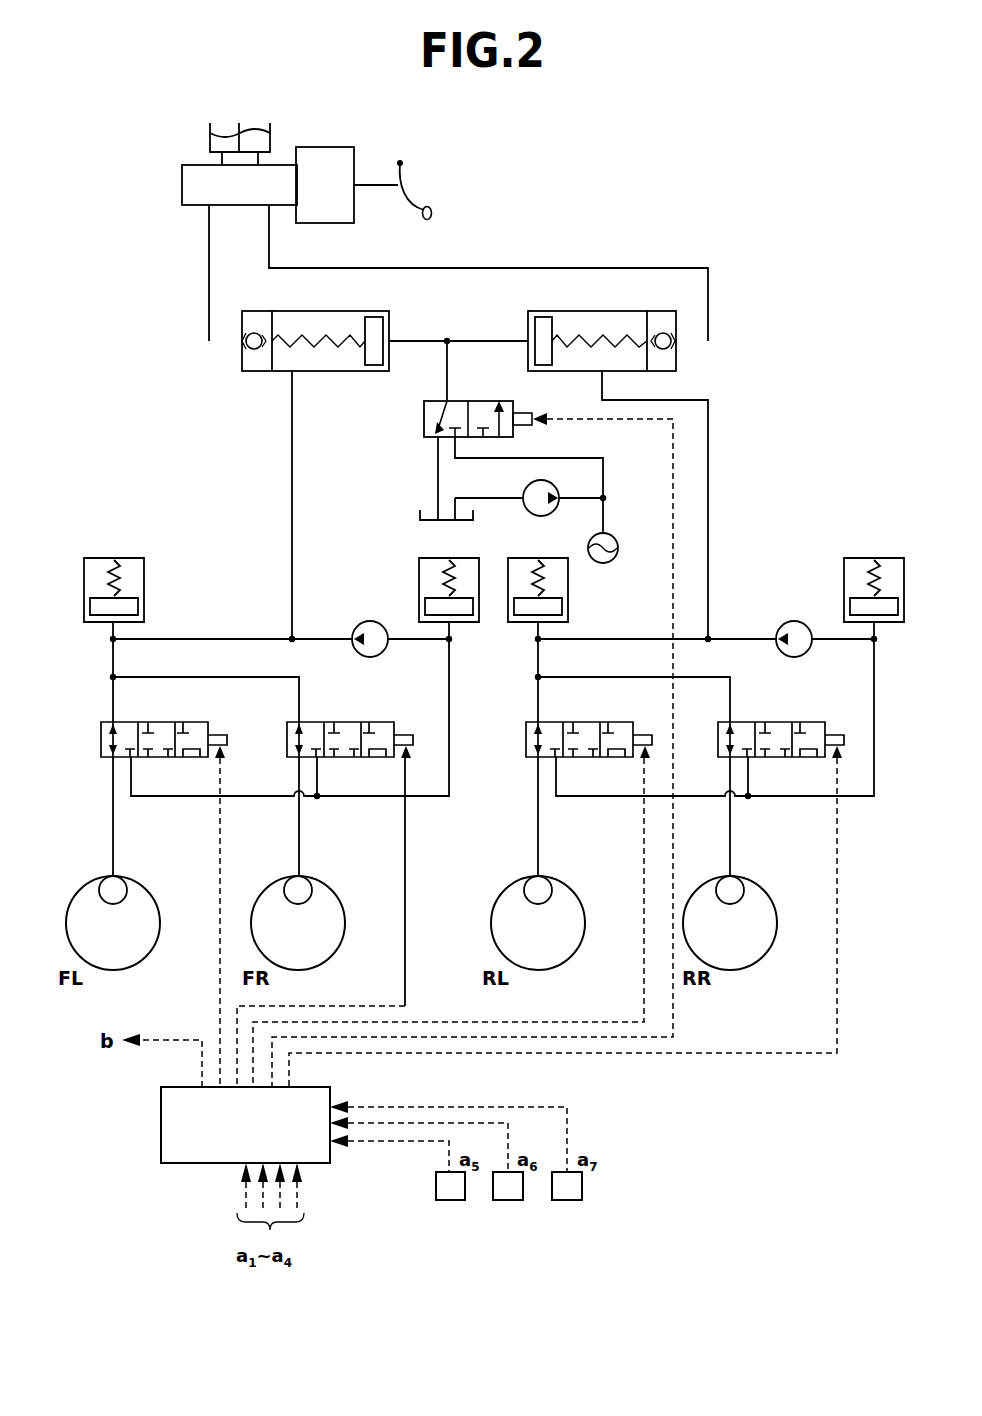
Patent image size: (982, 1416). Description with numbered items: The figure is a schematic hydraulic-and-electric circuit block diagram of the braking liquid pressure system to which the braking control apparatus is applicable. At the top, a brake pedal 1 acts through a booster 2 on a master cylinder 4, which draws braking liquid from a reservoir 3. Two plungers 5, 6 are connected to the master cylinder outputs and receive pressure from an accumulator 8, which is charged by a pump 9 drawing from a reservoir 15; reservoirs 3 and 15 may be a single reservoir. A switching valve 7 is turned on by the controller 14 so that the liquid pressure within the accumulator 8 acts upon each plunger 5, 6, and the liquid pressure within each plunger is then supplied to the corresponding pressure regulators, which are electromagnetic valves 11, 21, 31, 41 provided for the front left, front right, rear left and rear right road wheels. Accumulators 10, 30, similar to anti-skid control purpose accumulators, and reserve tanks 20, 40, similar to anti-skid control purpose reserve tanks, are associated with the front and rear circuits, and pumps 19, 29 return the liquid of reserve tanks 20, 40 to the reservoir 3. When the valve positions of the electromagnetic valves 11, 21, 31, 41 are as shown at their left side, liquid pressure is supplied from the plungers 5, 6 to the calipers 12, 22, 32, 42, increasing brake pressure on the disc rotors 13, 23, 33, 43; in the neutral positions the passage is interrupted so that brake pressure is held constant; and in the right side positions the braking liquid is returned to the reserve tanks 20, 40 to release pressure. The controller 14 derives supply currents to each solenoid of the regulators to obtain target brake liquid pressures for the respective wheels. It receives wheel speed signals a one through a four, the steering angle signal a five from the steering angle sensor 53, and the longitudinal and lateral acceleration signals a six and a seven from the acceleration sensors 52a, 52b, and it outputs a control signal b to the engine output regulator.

The brake pedal 1 is at (413, 192).
The booster 2 is at (340, 147).
The reservoir 3 is at (210, 130).
The master cylinder 4 is at (182, 188).
The plunger 5 is at (360, 311).
The plunger 6 is at (636, 311).
The switching valve 7 is at (424, 419).
The accumulator 8 is at (615, 538).
The pump 9 is at (528, 515).
The accumulator 10 is at (144, 585).
The electromagnetic valve 11 is at (200, 722).
The caliper 12 is at (118, 887).
The disc rotor 13 is at (150, 953).
The controller 14 is at (161, 1127).
The reservoir 15 is at (420, 518).
The pump 19 is at (360, 657).
The reserve tank 20 is at (419, 585).
The electromagnetic valve 21 is at (386, 722).
The caliper 22 is at (303, 887).
The disc rotor 23 is at (335, 953).
The pump 29 is at (784, 657).
The accumulator 30 is at (568, 585).
The electromagnetic valve 31 is at (625, 722).
The caliper 32 is at (543, 887).
The disc rotor 33 is at (575, 953).
The reserve tank 40 is at (844, 585).
The electromagnetic valve 41 is at (817, 722).
The caliper 42 is at (735, 887).
The disc rotor 43 is at (767, 953).
The longitudinal acceleration sensor 52a is at (508, 1200).
The lateral acceleration sensor 52b is at (567, 1200).
The steering angle sensor 53 is at (450, 1200).